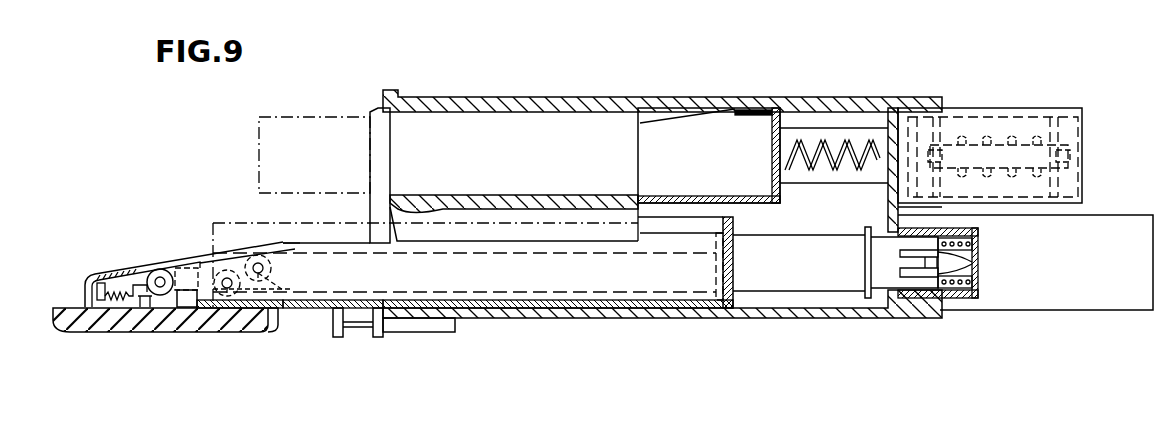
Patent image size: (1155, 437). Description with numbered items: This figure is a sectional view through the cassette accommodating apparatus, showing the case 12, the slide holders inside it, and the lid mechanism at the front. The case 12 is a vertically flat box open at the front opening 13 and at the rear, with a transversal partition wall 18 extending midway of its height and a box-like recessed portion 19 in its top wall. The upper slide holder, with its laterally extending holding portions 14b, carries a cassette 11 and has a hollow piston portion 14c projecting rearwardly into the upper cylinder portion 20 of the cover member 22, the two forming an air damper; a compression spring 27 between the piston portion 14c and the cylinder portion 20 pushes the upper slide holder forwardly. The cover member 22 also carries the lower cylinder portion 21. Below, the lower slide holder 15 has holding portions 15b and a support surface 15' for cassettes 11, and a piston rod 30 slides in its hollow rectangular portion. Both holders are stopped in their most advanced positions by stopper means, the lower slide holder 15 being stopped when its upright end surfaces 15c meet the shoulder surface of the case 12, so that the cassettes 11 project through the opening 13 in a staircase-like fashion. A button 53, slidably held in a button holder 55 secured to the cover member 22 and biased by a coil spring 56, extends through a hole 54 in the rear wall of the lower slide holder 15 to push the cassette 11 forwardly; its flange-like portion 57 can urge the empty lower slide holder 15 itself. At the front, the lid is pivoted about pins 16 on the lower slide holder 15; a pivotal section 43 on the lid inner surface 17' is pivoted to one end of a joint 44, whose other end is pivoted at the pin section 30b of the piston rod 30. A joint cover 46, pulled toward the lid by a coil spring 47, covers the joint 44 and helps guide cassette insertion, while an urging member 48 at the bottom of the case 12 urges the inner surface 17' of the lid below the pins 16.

The cassette 11 is at (297, 117).
The front opening 13 is at (366, 143).
The recessed portion 19 is at (533, 128).
The partition wall 18 is at (560, 206).
The holding portions 14b is at (700, 135).
The compression spring 27 is at (800, 140).
The hollow piston portion 14c is at (842, 133).
The cover member 22 is at (900, 138).
The upper cylinder portion 20 is at (1075, 131).
The lower cylinder portion 21 is at (1125, 297).
The button holder 55 is at (978, 267).
The coil spring 56 is at (958, 285).
The flange-like portion 57 is at (868, 300).
The button 53 is at (852, 262).
The piston rod 30 is at (787, 289).
The hole 54 is at (733, 270).
The upright end surfaces 15c is at (640, 233).
The lower slide holder 15 is at (473, 301).
The holding portions 15b is at (465, 304).
The support surface 15' is at (307, 247).
The case 12 is at (645, 314).
The urging member 48 is at (345, 338).
The inner surface of the lid 17' is at (147, 284).
The joint 44 is at (208, 258).
The joint cover 46 is at (104, 282).
The coil spring 47 is at (120, 302).
The pivotal section 43 is at (162, 270).
The pins 16 is at (227, 297).
The pin section 30b is at (258, 282).